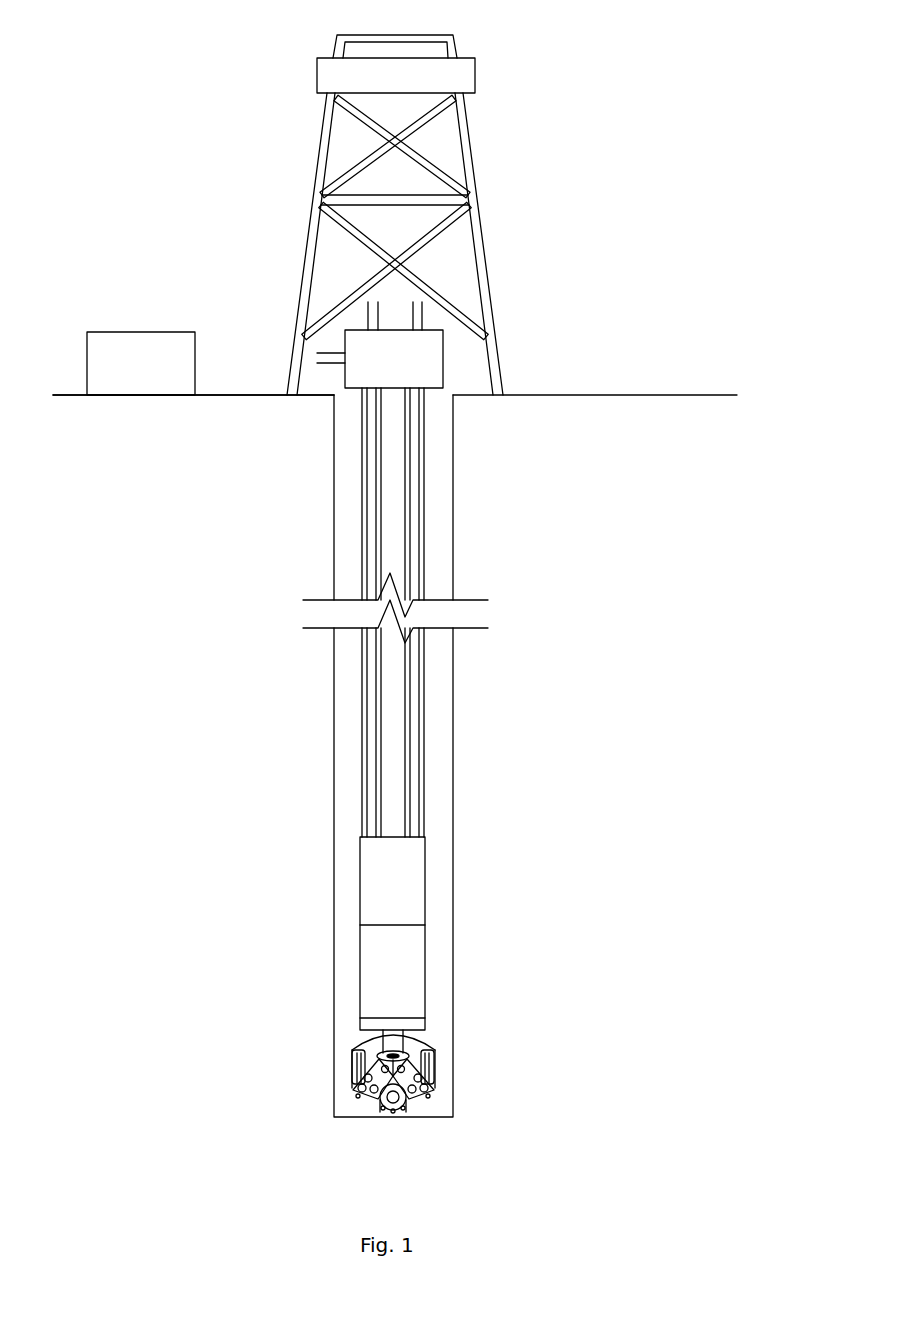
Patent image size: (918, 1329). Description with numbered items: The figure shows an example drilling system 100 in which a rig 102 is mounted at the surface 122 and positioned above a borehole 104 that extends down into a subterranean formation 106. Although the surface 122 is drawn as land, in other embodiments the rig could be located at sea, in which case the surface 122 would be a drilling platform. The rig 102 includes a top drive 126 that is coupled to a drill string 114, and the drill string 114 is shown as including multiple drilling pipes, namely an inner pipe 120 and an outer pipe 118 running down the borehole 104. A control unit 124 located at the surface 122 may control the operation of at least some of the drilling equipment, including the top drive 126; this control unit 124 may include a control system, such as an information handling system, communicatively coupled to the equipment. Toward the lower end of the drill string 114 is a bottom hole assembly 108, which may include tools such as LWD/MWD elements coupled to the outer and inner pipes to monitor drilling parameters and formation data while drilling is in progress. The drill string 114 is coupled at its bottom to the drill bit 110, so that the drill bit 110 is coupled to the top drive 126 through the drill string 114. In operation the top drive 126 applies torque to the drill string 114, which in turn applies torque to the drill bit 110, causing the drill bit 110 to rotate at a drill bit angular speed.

The drilling system 100 is at (684, 99).
The rig 102 is at (475, 157).
The borehole 104 is at (334, 548).
The subterranean formation 106 is at (125, 567).
The bottom hole assembly 108 is at (320, 837).
The drill bit 110 is at (351, 1064).
The drill string 114 is at (518, 485).
The outer pipe 118 is at (359, 787).
The inner pipe 120 is at (375, 698).
The surface 122 is at (625, 395).
The control unit 124 is at (158, 375).
The top drive 126 is at (423, 317).